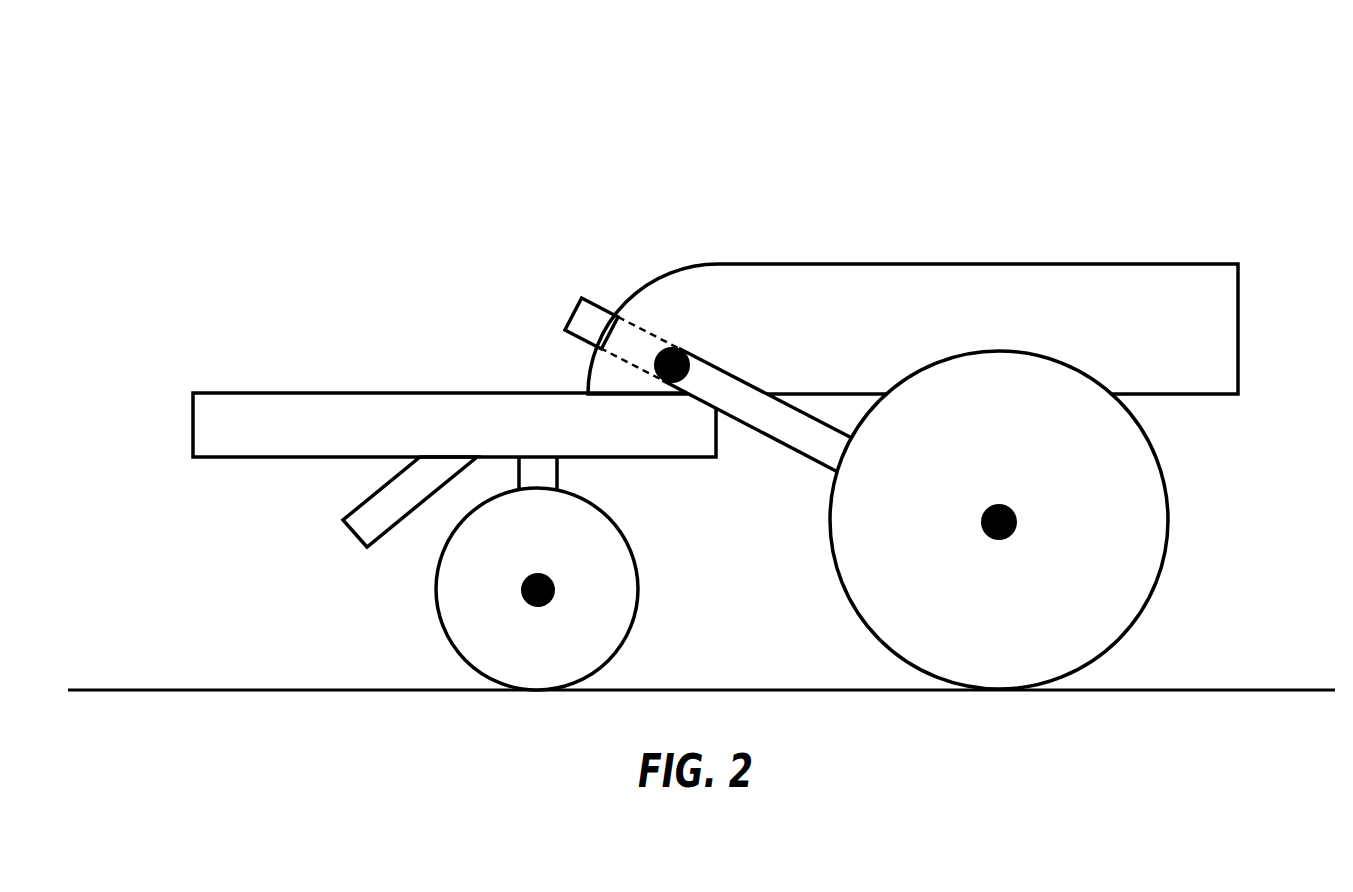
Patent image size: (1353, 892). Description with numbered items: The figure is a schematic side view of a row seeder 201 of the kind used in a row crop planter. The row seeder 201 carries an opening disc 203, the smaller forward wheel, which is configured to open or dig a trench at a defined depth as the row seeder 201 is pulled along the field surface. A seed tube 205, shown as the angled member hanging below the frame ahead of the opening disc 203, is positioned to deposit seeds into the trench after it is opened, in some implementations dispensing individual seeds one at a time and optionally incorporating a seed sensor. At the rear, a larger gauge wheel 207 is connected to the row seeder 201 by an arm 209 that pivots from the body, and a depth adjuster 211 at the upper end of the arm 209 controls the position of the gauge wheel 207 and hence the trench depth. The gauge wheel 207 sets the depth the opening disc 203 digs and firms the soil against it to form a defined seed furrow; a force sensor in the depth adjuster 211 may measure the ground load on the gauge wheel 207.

The row seeder 201 is at (222, 164).
The opening disc 203 is at (640, 590).
The seed tube 205 is at (353, 538).
The gauge wheel 207 is at (1173, 522).
The arm 209 is at (820, 465).
The depth adjuster 211 is at (573, 315).